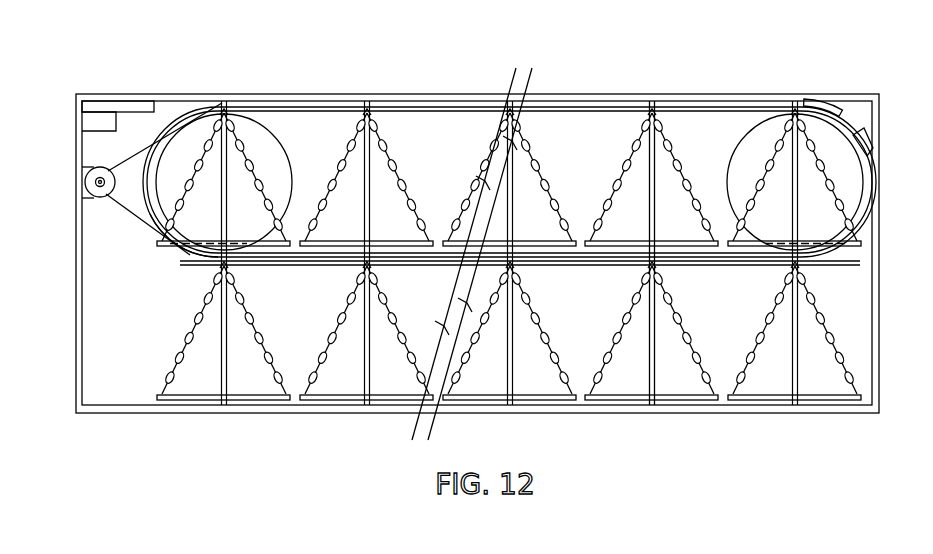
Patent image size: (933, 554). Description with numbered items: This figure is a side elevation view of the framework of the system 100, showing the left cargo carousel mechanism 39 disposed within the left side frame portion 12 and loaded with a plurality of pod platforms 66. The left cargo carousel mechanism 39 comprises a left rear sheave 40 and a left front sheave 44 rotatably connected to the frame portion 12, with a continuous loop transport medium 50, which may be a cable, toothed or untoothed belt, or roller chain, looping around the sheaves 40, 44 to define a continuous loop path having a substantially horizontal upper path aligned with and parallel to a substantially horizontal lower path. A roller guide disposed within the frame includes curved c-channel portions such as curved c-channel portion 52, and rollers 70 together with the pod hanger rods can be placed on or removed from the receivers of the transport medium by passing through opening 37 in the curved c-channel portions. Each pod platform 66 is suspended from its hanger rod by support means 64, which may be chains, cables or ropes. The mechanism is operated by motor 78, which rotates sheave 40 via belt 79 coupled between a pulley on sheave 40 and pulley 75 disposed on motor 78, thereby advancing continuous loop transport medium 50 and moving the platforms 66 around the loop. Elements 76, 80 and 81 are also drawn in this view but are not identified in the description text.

The system 100 is at (395, 28).
The left side frame portion 12 is at (185, 99).
The left cargo carousel mechanism 39 is at (300, 128).
The rollers 70 is at (657, 108).
The drive motor 76 is at (137, 103).
The mounting bracket 80 is at (102, 125).
The motor 78 is at (92, 177).
The pulley 75 is at (118, 197).
The belt 79 is at (127, 210).
The left rear sheave 40 is at (262, 148).
The left front sheave 44 is at (747, 152).
The continuous loop transport medium 50 is at (578, 112).
The curved c-channel portion 52 is at (330, 103).
The lower belt run 81 is at (193, 250).
The opening 37 is at (850, 127).
The platform 66 is at (345, 398).
The support means 64 is at (398, 152).